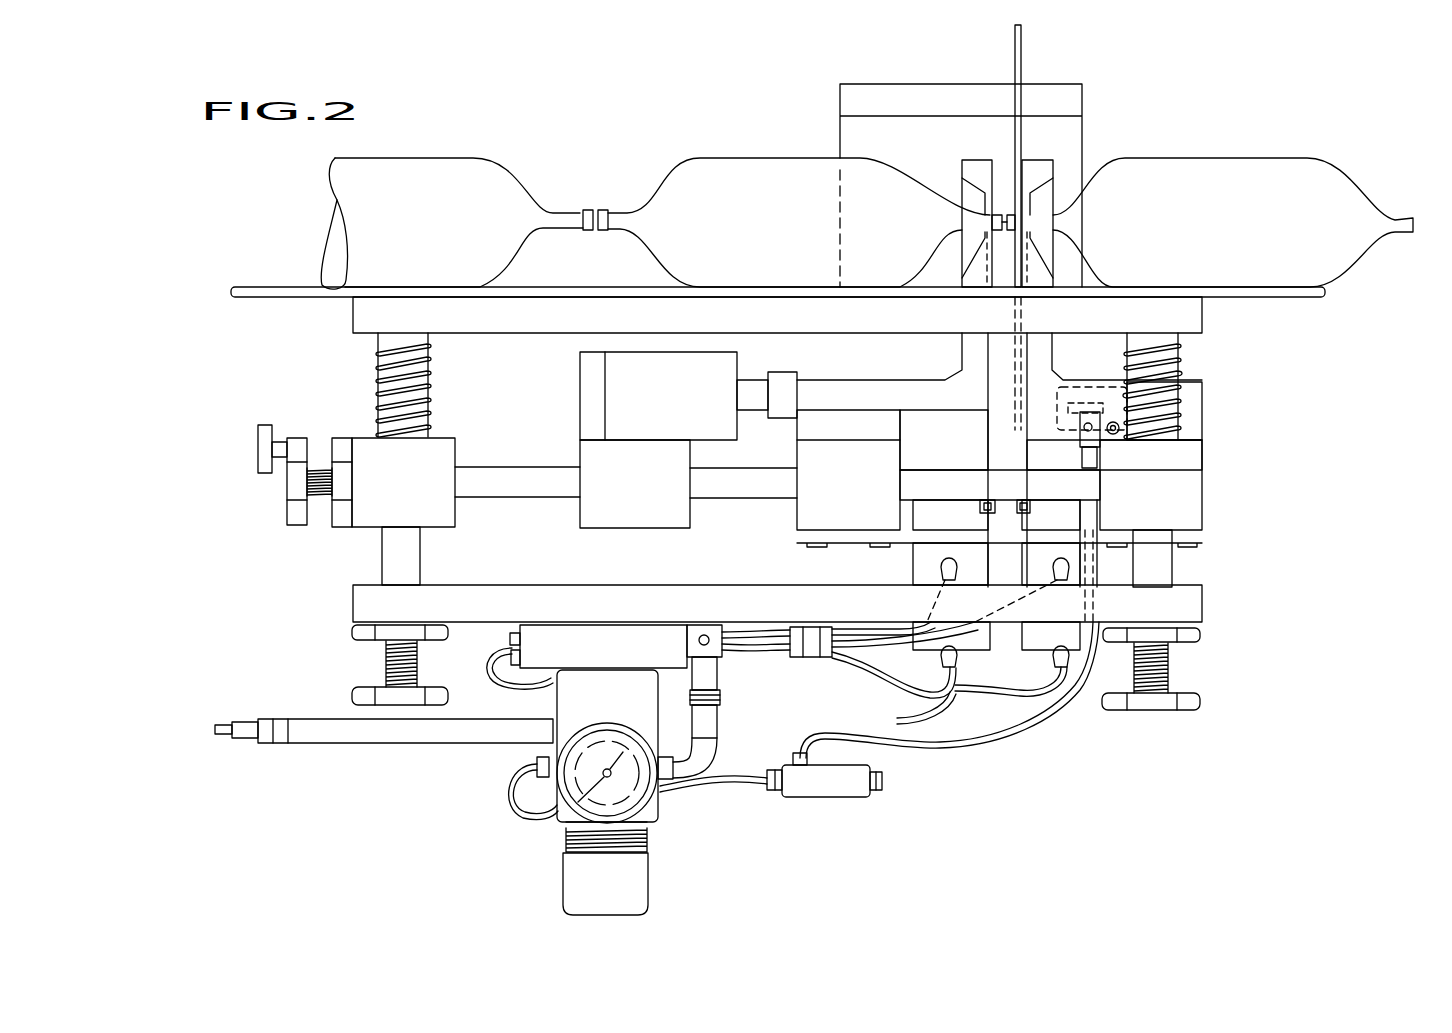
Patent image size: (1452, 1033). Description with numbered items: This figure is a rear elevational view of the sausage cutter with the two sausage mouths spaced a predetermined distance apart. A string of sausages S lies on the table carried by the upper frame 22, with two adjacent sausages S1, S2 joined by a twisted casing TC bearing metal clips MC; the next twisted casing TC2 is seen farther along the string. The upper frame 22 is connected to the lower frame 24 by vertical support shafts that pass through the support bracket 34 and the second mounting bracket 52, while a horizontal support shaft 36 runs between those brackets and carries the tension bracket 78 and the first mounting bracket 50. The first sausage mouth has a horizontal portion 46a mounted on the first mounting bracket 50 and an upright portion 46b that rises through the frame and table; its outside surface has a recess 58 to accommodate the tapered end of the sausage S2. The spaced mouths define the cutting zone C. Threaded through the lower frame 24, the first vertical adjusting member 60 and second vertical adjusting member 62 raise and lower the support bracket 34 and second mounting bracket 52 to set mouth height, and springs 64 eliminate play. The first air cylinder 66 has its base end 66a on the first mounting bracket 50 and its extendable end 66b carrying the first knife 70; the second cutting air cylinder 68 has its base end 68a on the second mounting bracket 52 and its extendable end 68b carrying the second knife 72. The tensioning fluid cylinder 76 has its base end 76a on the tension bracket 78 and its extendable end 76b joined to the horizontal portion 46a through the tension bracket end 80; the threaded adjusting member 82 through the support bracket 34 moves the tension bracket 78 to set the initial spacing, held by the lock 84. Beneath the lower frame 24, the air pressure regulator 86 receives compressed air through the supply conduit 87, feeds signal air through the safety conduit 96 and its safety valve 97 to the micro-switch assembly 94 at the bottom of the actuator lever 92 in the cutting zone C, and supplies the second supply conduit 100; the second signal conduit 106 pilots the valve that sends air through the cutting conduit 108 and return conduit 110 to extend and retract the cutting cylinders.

The upper frame 22 is at (353, 308).
The lower frame 24 is at (353, 600).
The support bracket 34 is at (368, 517).
The horizontal support shaft 36 is at (535, 490).
The horizontal portion 46a is at (812, 380).
The upright portion 46b is at (967, 343).
The first mounting bracket 50 is at (805, 510).
The second mounting bracket 52 is at (1193, 498).
The recess 58 is at (973, 203).
The first vertical adjusting member 60 is at (352, 693).
The second vertical adjusting member 62 is at (1200, 703).
The springs 64 is at (377, 375).
The first air cylinder 66 is at (983, 650).
The base end 66a is at (923, 578).
The extendable end 66b is at (937, 520).
The second cutting air cylinder 68 is at (1033, 650).
The base end 68a is at (1097, 583).
The extendable end 68b is at (1090, 572).
The first knife 70 is at (988, 443).
The second knife 72 is at (1030, 460).
The tensioning fluid cylinder 76 is at (580, 368).
The base end 76a is at (583, 425).
The extendable end 76b is at (745, 376).
The tension bracket 78 is at (620, 520).
The tension bracket end 80 is at (782, 373).
The threaded adjusting member 82 is at (290, 495).
The lock 84 is at (258, 428).
The air pressure regulator 86 is at (563, 880).
The supply conduit 87 is at (355, 738).
The actuator lever 92 is at (1022, 48).
The micro-switch assembly 94 is at (1098, 445).
The safety conduit 96 is at (913, 745).
The safety valve 97 is at (847, 792).
The second supply conduit 100 is at (722, 663).
The second signal conduit 106 is at (533, 690).
The cutting conduit 108 is at (907, 715).
The return conduit 110 is at (860, 635).
The cutting zone C is at (1005, 170).
The twisted casing TC is at (1022, 213).
The next twisted casing TC2 is at (598, 207).
The metal clips MC is at (588, 218).
The string of sausages S is at (1240, 160).
The sausage S1 is at (1325, 180).
The sausage S2 is at (700, 165).